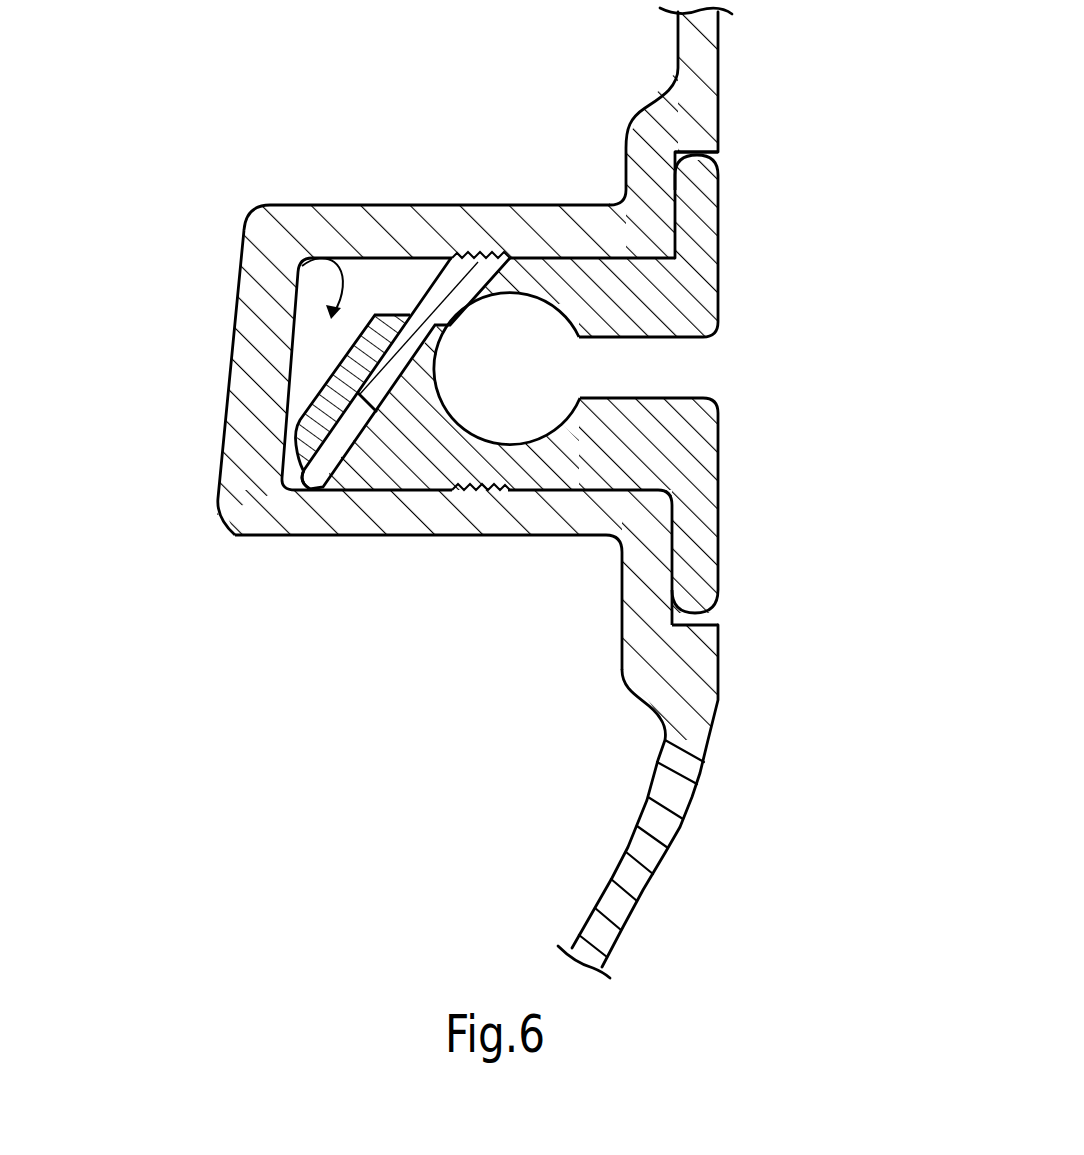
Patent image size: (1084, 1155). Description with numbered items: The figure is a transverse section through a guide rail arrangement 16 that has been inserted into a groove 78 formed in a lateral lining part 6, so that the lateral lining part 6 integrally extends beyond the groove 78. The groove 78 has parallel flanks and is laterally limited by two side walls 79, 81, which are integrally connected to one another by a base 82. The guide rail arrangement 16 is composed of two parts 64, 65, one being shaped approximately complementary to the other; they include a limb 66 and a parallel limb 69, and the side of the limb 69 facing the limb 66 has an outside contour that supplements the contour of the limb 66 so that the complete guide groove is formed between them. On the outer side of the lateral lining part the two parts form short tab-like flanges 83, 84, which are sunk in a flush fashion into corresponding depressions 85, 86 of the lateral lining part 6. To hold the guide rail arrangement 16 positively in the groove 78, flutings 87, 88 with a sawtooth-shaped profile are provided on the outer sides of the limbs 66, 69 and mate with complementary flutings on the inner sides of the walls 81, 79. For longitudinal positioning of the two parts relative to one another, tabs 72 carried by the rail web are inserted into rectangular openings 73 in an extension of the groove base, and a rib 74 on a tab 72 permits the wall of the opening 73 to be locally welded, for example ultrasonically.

The lateral lining part 6 is at (652, 862).
The guide rail arrangement 16 is at (786, 348).
The part of the guide rail 64 is at (772, 260).
The part of the guide rail (flange) 65 is at (800, 508).
The limb 66 is at (608, 283).
The limb 69 is at (578, 467).
The tab 72 is at (323, 470).
The rectangular opening 73 is at (308, 443).
The rib 74 is at (296, 466).
The groove 78 is at (312, 252).
The side wall 79 is at (453, 513).
The side wall 81 is at (398, 205).
The base 82 is at (247, 358).
The tab-like flange 83 is at (700, 198).
The tab-like flange 84 is at (700, 590).
The depression 85 is at (707, 621).
The depression 86 is at (722, 152).
The fluting 87 is at (470, 258).
The fluting 88 is at (508, 490).